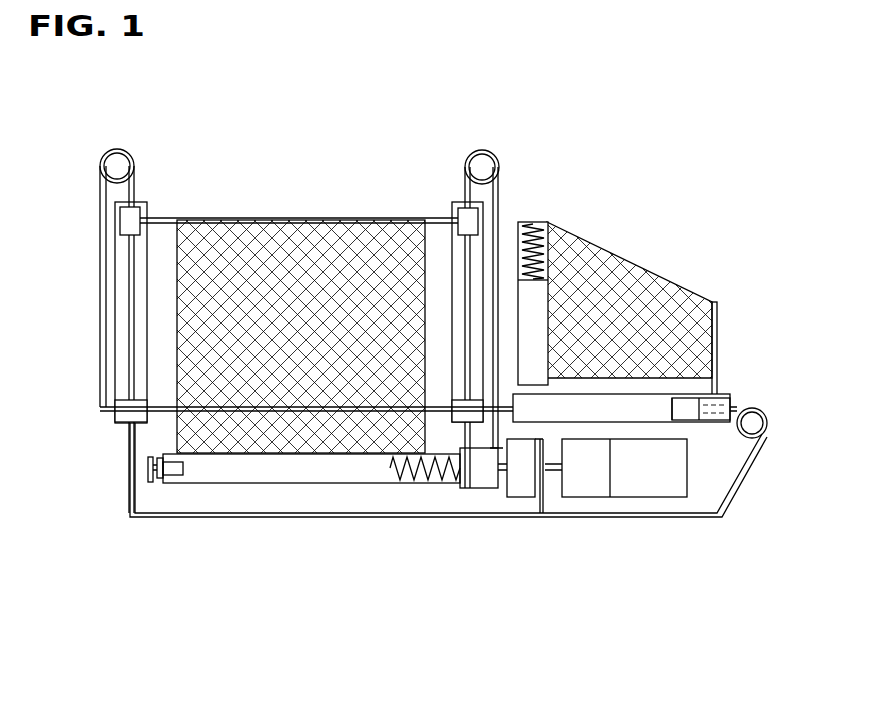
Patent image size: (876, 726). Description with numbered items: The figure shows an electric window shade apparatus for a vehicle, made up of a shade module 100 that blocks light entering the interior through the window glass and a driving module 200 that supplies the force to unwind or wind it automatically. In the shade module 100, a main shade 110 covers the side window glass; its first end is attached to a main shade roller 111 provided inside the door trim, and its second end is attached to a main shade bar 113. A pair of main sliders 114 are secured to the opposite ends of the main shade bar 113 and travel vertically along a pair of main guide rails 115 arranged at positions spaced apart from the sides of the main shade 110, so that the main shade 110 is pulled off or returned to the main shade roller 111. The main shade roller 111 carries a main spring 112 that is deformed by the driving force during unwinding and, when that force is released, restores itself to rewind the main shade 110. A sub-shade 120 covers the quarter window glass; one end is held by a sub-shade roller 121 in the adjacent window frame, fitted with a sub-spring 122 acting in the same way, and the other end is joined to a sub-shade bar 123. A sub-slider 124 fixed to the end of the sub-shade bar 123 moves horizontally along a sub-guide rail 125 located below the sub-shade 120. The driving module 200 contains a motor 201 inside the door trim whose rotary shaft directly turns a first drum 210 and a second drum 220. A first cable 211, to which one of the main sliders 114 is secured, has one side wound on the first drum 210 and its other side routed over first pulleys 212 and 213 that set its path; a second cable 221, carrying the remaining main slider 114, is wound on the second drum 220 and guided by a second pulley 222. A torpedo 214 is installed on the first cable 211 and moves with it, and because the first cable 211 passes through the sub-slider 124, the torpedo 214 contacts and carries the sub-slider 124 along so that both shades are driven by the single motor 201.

The shade module 100 is at (709, 658).
The main shade 110 is at (270, 235).
The main shade roller 111 is at (245, 470).
The main spring 112 is at (440, 480).
The main shade bar 113 is at (322, 225).
The main slider 114 is at (128, 222).
The main guide rail 115 is at (115, 415).
The sub-shade 120 is at (645, 290).
The sub-shade roller 121 is at (545, 300).
The sub-spring 122 is at (533, 222).
The sub-shade bar 123 is at (717, 330).
The sub-slider 124 is at (730, 400).
The sub-guide rail 125 is at (722, 405).
The driving module 200 is at (714, 691).
The motor 201 is at (630, 480).
The first drum 210 is at (527, 490).
The first cable 211 is at (160, 518).
The first pulley 212 is at (117, 149).
The first pulley 213 is at (768, 418).
The torpedo 214 is at (688, 420).
The second drum 220 is at (486, 478).
The second cable 221 is at (500, 185).
The second pulley 222 is at (482, 150).